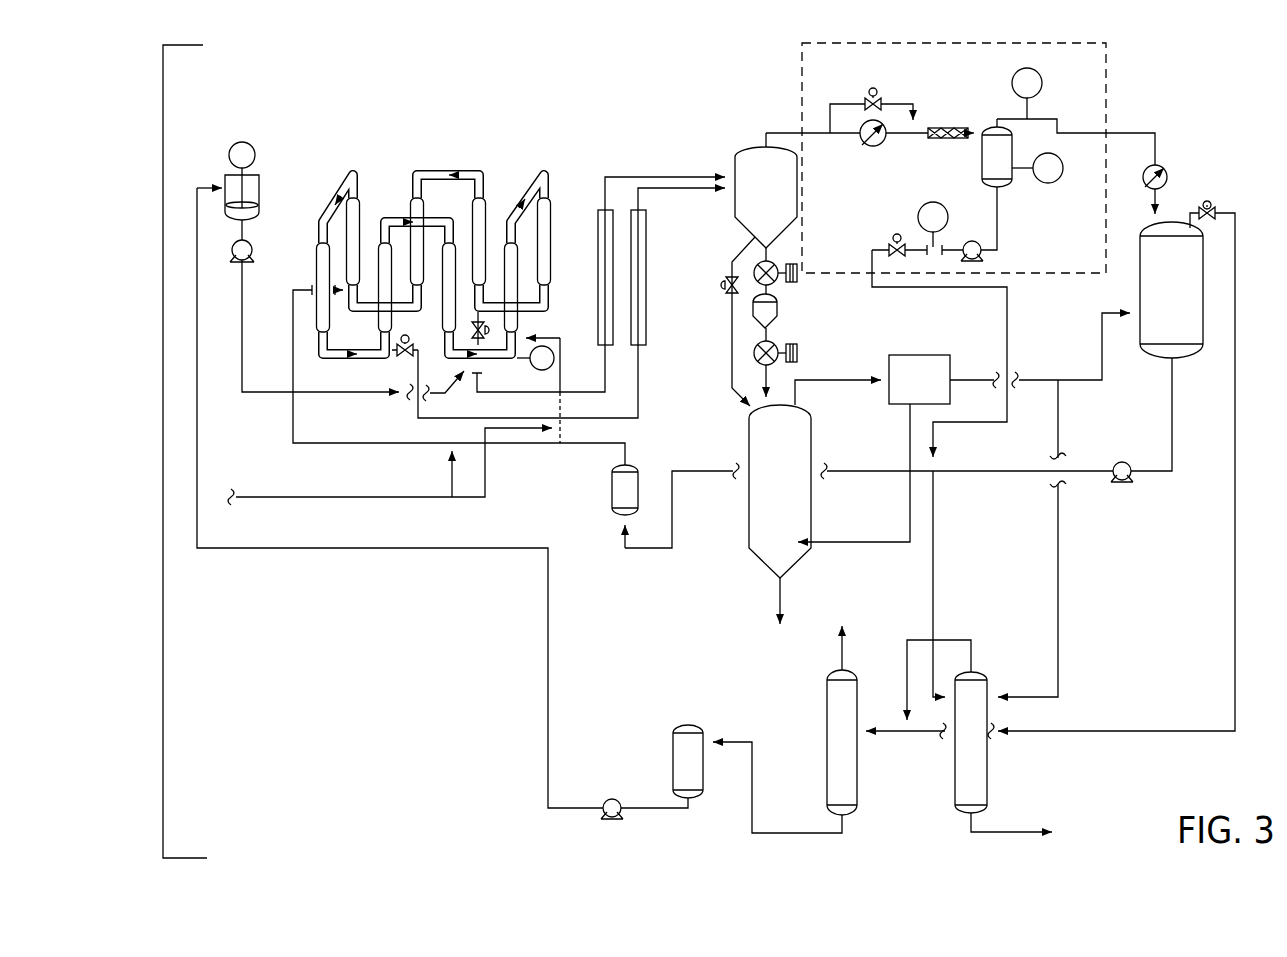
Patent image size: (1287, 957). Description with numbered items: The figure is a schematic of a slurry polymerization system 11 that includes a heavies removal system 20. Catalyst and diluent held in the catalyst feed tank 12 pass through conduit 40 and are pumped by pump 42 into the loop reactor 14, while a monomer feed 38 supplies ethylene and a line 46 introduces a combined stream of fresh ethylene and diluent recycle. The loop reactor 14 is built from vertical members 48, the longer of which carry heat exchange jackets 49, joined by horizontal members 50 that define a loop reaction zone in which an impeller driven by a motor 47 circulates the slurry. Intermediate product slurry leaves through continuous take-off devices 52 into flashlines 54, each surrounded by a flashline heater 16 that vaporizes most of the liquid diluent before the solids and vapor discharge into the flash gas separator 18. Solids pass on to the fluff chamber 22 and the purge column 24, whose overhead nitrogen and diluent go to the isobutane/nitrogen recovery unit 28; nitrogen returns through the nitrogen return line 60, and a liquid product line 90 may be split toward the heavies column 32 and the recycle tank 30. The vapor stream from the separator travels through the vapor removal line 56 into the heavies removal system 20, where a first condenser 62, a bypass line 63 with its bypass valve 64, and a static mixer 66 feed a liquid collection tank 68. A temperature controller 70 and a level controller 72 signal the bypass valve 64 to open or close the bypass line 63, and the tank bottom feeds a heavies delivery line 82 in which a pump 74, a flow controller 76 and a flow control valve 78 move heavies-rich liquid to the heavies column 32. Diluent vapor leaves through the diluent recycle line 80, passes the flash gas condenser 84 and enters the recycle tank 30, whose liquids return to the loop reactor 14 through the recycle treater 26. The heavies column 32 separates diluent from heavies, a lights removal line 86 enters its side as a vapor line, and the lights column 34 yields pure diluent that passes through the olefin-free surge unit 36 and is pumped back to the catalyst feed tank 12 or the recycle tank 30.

The slurry polymerization system 11 is at (163, 455).
The catalyst feed tank 12 is at (228, 175).
The loop reactor 14 is at (447, 168).
The flashline heater 16 is at (597, 312).
The flash gas separator 18 is at (733, 160).
The heavies removal system 20 is at (1110, 72).
The fluff chamber 22 is at (778, 312).
The purge column 24 is at (749, 445).
The recycle treater 26 is at (612, 486).
The isobutane/nitrogen recovery unit 28 is at (912, 355).
The recycle tank 30 is at (1138, 312).
The heavies column 32 is at (990, 790).
The lights column 34 is at (858, 796).
The olefin-free surge unit 36 is at (690, 724).
The monomer feed 38 is at (235, 498).
The conduit 40 is at (245, 228).
The pump 42 is at (250, 263).
The line 46 is at (365, 447).
The motor 47 is at (537, 366).
The vertical members 48 is at (357, 178).
The heat exchange jackets 49 is at (552, 218).
The horizontal members 50 is at (345, 178).
The continuous take-off device 52 is at (478, 318).
The flashline 54 is at (492, 396).
The vapor removal line 56 is at (786, 130).
The nitrogen return line 60 is at (910, 448).
The first condenser 62 is at (875, 148).
The bypass line 63 is at (848, 103).
The bypass valve 64 is at (880, 88).
The static mixer 66 is at (937, 128).
The liquid collection tank 68 is at (982, 163).
The temperature controller 70 is at (1038, 76).
The level controller 72 is at (1052, 183).
The pump 74 is at (981, 262).
The flow controller 76 is at (925, 205).
The flow control valve 78 is at (893, 243).
The diluent recycle line 80 is at (1130, 133).
The heavies delivery line 82 is at (1008, 314).
The flash gas condenser 84 is at (1170, 185).
The lights removal line 86 is at (1237, 318).
The liquid product line 90 is at (1038, 378).